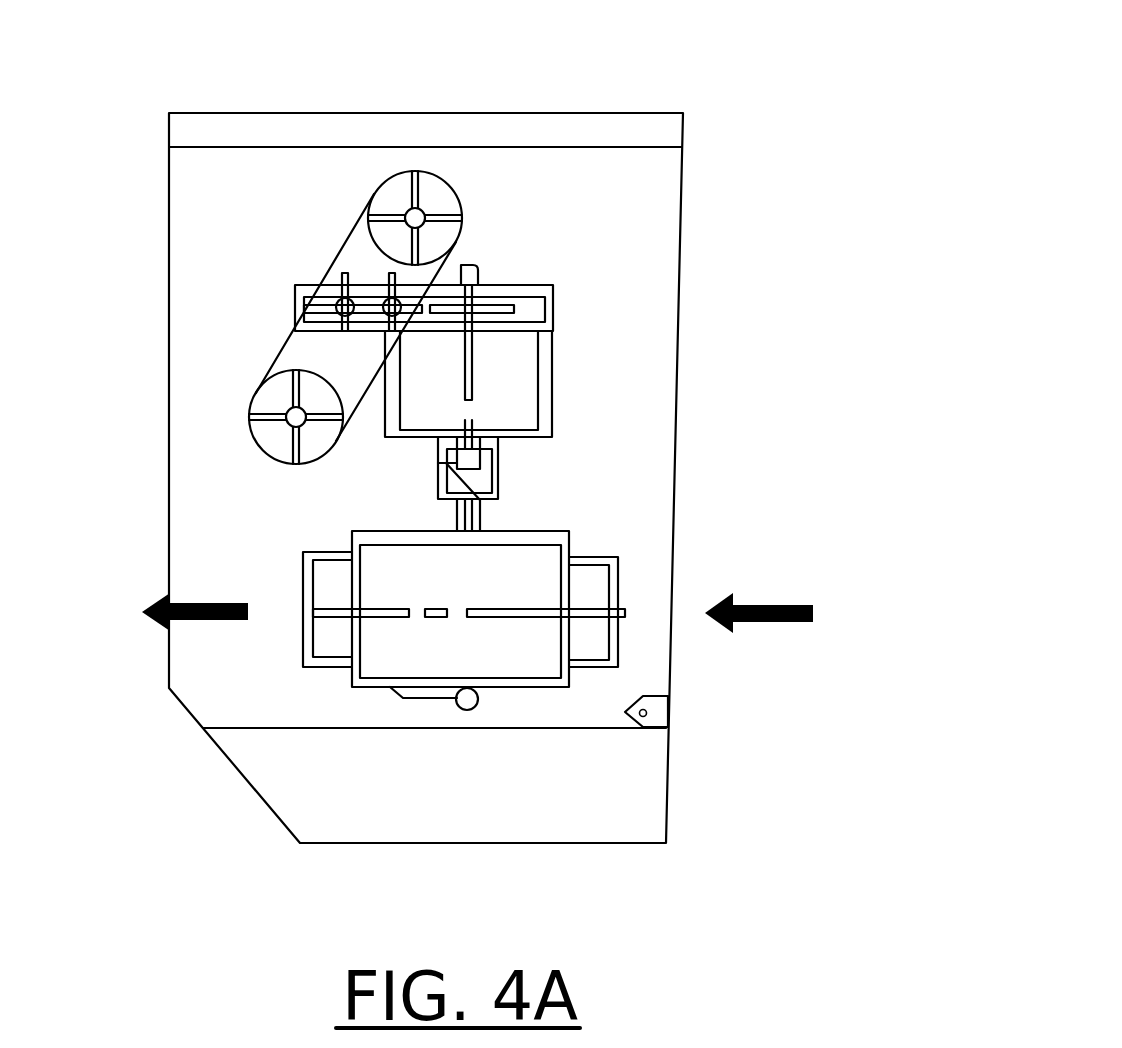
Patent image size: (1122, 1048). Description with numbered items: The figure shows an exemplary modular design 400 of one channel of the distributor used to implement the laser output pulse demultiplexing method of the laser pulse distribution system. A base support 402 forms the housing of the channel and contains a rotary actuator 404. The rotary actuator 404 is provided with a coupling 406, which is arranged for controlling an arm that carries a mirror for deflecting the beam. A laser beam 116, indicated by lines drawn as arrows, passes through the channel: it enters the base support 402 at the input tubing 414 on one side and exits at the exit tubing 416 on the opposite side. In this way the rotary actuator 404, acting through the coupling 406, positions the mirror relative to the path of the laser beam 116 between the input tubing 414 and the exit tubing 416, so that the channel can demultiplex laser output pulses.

The modular design of one channel 400 is at (416, 84).
The base support 402 is at (597, 113).
The rotary actuator 404 is at (552, 437).
The coupling 406 is at (498, 499).
The input tubing 414 is at (618, 667).
The exit tubing 416 is at (303, 667).
The laser beam 116 is at (552, 608).